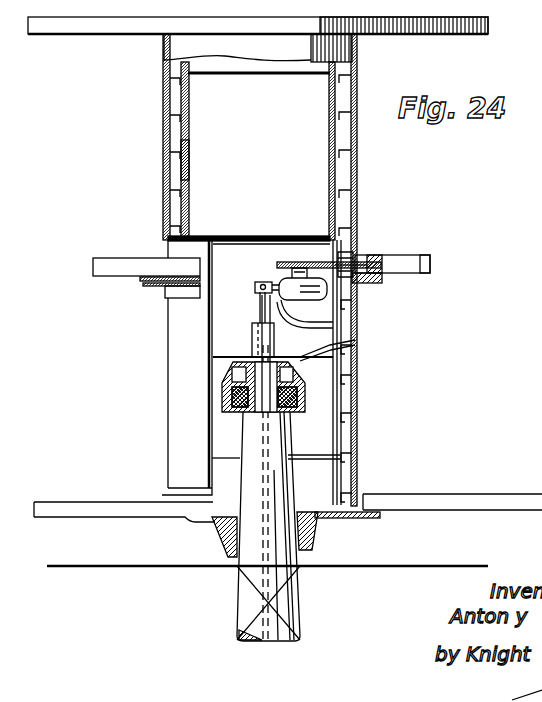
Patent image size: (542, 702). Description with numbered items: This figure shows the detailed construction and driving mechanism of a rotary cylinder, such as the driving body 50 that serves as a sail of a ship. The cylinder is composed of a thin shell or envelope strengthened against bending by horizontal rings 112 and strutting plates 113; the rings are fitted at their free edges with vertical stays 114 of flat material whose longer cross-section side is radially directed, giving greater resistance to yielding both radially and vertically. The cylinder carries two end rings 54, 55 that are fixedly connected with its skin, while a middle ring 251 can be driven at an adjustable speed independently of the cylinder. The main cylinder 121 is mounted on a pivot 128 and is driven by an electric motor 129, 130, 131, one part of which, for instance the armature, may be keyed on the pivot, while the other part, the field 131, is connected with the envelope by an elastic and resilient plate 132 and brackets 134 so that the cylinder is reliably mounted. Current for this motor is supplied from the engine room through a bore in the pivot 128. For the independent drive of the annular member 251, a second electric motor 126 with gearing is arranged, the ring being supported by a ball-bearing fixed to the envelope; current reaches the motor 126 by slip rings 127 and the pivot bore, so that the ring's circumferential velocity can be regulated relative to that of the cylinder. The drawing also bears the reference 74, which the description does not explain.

The end disc 54 is at (438, 34).
The horizontal ring 112 is at (185, 114).
The vertical stay 114 is at (187, 155).
The main cylinder 121 is at (297, 173).
The driving body 50 is at (360, 202).
The strutting plate 113 is at (221, 243).
The middle ring 251 is at (396, 263).
The slip rings 127 is at (268, 277).
The second electric motor 126 is at (308, 298).
The elastic and resilient plate 132 is at (250, 346).
The brackets 134 is at (338, 361).
The field 131 is at (300, 400).
The electric motor part 130 is at (250, 405).
The electric motor part 129 is at (290, 412).
The end disc 55 is at (402, 506).
The pivot 128 is at (267, 493).
The floor 74 is at (267, 588).